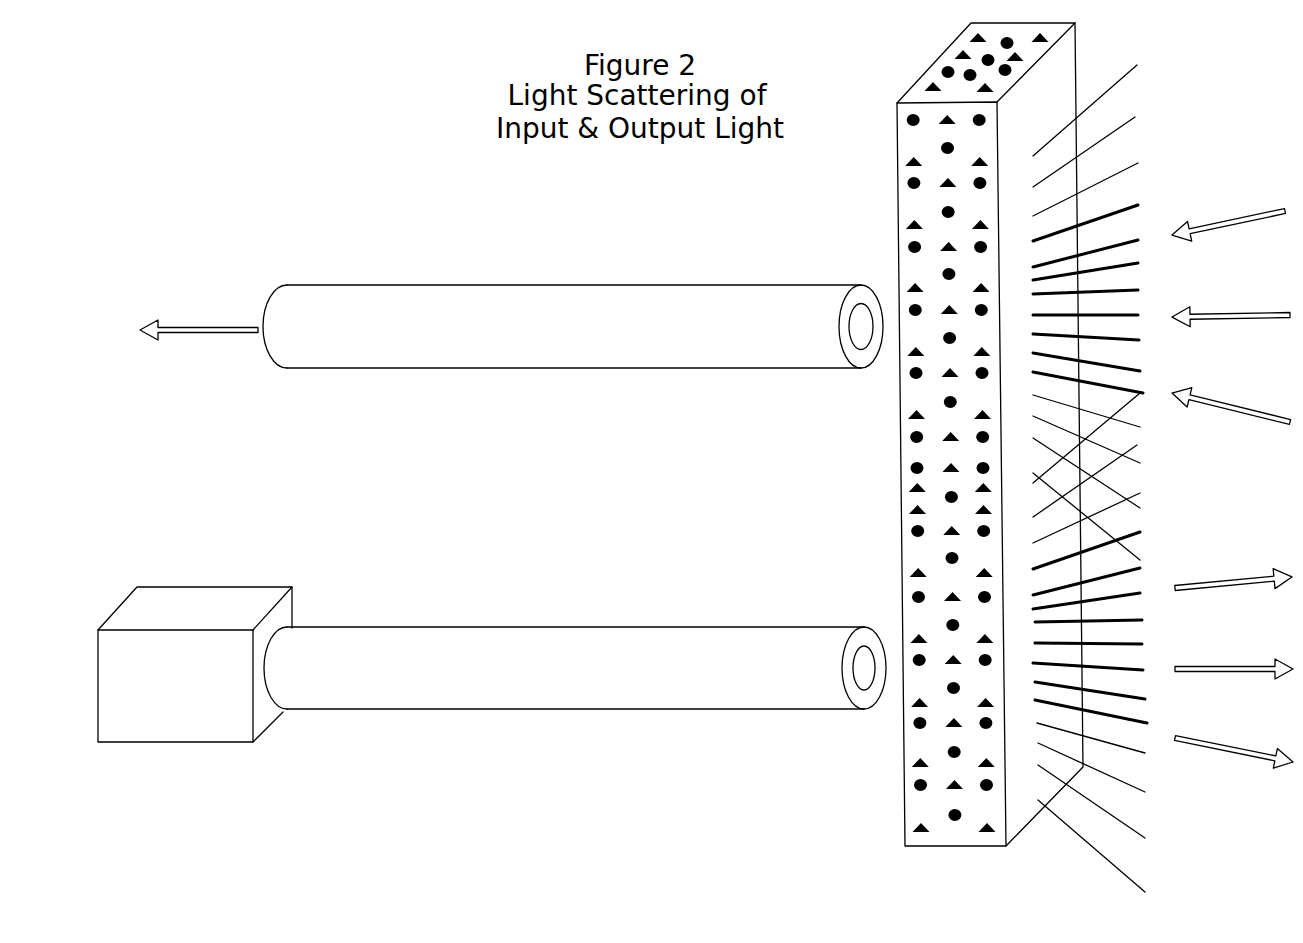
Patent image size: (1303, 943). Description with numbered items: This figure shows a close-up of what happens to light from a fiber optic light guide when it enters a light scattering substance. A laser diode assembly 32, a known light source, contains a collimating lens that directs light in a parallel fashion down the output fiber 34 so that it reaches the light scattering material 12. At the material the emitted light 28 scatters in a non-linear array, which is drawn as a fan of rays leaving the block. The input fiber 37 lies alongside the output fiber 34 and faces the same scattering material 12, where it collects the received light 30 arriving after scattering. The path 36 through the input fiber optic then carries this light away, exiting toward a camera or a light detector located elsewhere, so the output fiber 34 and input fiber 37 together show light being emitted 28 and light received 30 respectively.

The light scattering material 12 is at (920, 202).
The emitted light 28 is at (1163, 747).
The received light 30 is at (1197, 172).
The laser diode assembly 32 is at (218, 610).
The output fiber 34 is at (613, 658).
The light path through input fiber optic 36 is at (202, 315).
The input fiber 37 is at (660, 338).